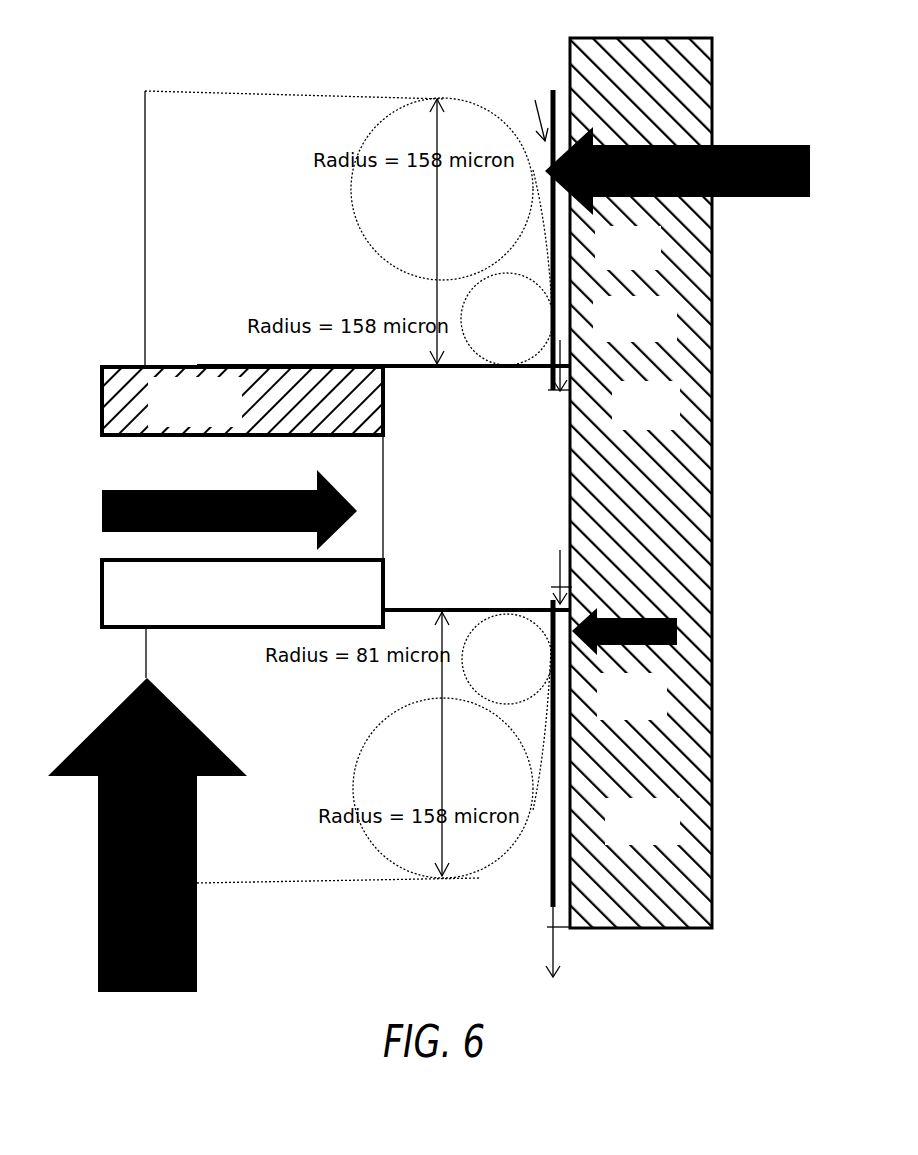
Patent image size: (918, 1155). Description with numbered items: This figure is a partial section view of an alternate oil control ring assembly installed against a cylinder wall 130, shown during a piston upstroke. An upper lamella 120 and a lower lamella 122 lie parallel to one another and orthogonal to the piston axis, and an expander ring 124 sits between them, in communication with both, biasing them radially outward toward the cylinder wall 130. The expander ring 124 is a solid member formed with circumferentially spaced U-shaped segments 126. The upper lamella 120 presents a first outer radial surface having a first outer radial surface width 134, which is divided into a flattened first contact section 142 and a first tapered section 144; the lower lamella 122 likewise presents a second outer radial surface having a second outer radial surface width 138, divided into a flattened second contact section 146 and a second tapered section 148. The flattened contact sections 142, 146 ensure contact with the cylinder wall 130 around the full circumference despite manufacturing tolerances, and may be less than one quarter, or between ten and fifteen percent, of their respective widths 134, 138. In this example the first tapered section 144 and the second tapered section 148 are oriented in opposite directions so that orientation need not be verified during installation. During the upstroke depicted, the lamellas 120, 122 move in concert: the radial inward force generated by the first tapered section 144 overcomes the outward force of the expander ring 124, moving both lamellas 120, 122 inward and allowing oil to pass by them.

The upper lamella 120 is at (357, 229).
The lower lamella 122 is at (383, 746).
The expander ring 124 is at (229, 503).
The U-shaped segments 126 is at (242, 401).
The cylinder wall 130 is at (641, 483).
The first outer radial surface width 134 is at (437, 297).
The second outer radial surface width 138 is at (442, 685).
The first contact section 142 is at (553, 322).
The first tapered section 144 is at (553, 237).
The second contact section 146 is at (553, 680).
The second tapered section 148 is at (540, 757).